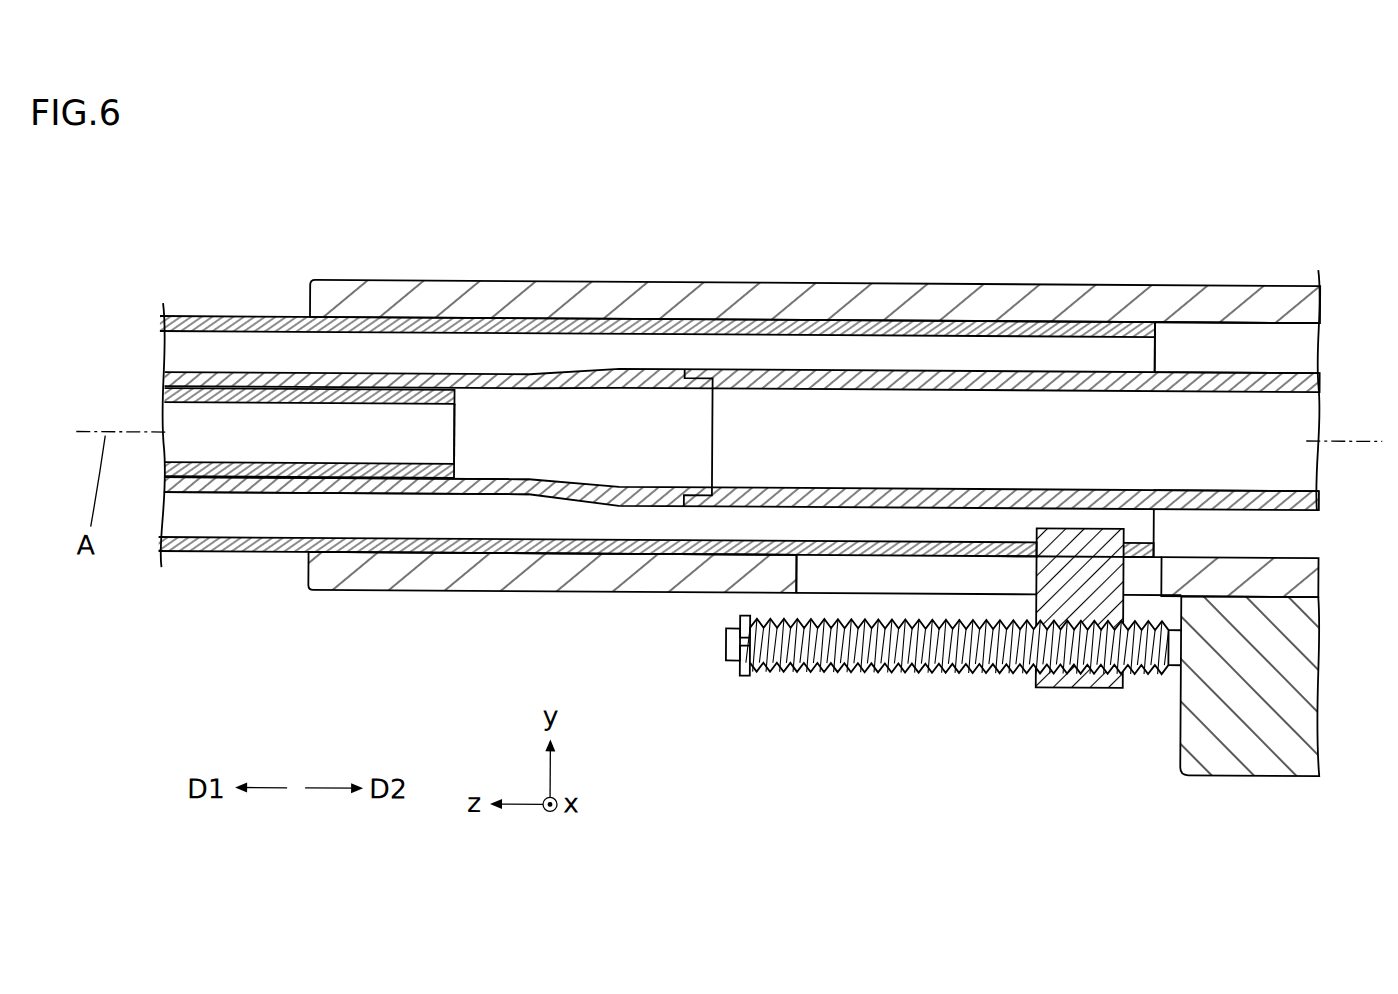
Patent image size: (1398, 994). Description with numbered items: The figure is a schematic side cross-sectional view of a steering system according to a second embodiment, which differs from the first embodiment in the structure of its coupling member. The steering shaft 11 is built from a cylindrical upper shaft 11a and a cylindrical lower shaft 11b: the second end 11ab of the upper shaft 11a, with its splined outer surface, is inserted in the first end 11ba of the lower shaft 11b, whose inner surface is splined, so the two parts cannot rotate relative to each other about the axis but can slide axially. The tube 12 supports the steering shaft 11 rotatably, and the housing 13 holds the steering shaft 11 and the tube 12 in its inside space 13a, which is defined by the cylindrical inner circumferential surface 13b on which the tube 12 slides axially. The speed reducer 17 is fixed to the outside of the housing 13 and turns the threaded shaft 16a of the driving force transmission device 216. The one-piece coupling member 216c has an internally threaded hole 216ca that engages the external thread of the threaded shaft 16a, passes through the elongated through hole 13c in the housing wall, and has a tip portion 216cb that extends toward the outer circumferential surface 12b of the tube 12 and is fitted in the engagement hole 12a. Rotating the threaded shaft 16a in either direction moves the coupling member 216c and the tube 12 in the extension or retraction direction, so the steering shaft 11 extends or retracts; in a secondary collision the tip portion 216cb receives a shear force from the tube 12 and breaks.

The steering shaft 11 is at (218, 366).
The upper shaft 11a is at (213, 478).
The first end of the lower shaft 11ba is at (266, 492).
The lower shaft 11b is at (357, 477).
The second end of the upper shaft 11ab is at (453, 464).
The tube 12 is at (262, 316).
The engagement hole 12a is at (1042, 548).
The outer circumferential surface of the tube 12b is at (630, 554).
The housing 13 is at (378, 279).
The inside space 13a is at (1208, 337).
The inner circumferential surface of the housing 13b is at (1262, 328).
The through hole 13c is at (803, 554).
The driving force transmission device 216 is at (944, 717).
The threaded shaft 16a is at (862, 668).
The coupling member 216c is at (1037, 598).
The internally threaded hole 216ca is at (1063, 660).
The tip portion 216cb is at (1167, 484).
The speed reducer 17 is at (1298, 770).